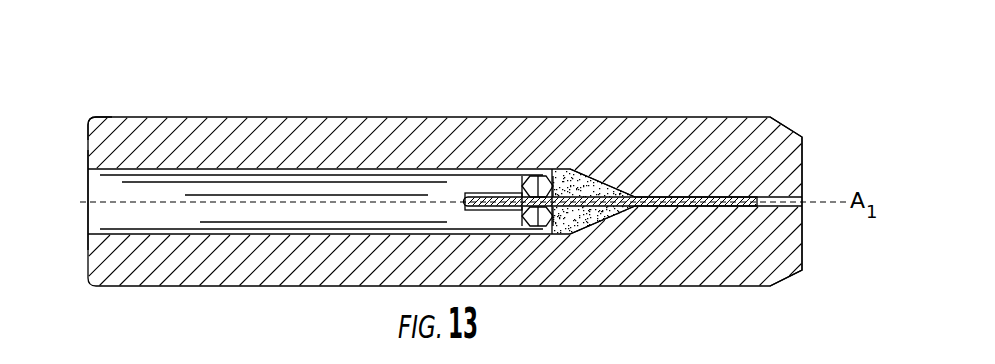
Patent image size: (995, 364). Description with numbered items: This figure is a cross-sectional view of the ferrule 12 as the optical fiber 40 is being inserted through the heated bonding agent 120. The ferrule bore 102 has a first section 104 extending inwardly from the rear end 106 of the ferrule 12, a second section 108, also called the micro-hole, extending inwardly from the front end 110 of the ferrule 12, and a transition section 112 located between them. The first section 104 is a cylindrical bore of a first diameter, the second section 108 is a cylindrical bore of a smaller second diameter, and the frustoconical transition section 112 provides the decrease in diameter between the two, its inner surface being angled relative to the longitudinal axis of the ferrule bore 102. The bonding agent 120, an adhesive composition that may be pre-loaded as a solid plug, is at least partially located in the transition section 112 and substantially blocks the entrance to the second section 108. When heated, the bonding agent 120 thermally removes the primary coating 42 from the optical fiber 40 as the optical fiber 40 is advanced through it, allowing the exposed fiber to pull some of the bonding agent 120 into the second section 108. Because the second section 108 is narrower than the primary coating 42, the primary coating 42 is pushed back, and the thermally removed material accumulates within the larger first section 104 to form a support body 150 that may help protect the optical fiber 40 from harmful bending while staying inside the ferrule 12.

The ferrule 12 is at (227, 114).
The optical fiber 40 is at (470, 227).
The primary coating 42 is at (505, 208).
The ferrule bore 102 is at (85, 187).
The first section 104 is at (174, 180).
The rear end 106 is at (86, 137).
The second section 108 is at (762, 207).
The front end 110 is at (802, 155).
The transition section 112 is at (584, 176).
The bonding agent 120 is at (580, 222).
The support body 150 is at (530, 183).